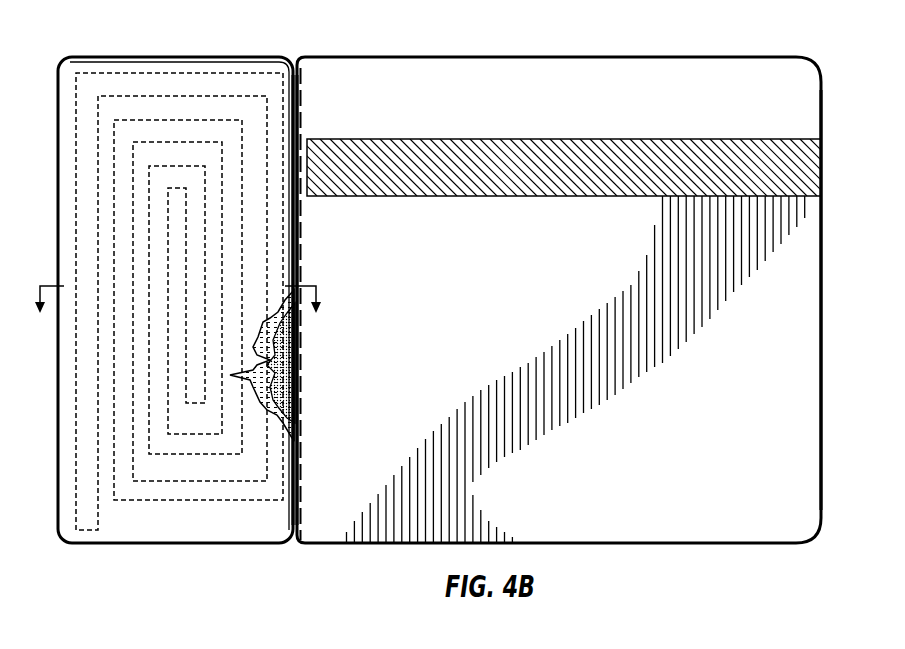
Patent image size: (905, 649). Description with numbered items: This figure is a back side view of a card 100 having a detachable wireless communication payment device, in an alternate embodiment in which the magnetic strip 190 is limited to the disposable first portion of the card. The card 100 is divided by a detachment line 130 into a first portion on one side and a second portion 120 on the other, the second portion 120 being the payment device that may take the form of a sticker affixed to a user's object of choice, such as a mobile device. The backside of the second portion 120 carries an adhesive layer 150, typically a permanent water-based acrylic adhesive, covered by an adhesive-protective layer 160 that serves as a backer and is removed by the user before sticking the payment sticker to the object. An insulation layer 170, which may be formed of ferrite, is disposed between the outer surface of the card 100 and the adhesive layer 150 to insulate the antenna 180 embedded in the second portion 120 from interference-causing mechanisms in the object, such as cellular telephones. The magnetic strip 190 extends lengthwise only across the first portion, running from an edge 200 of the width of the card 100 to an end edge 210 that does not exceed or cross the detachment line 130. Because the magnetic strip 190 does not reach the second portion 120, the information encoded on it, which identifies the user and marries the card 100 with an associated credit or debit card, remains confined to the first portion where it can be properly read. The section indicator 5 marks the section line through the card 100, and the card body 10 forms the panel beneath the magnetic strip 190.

The card body 10 is at (800, 315).
The card 100 is at (672, 44).
The second portion 120 is at (163, 58).
The detachment line 130 is at (302, 258).
The adhesive layer 150 is at (297, 423).
The adhesive-protective layer 160 is at (273, 521).
The insulation layer 170 is at (297, 390).
The antenna 180 is at (77, 487).
The magnetic strip 190 is at (750, 148).
The edge 200 is at (828, 157).
The end edge 210 is at (309, 134).
The section line 5 is at (179, 324).